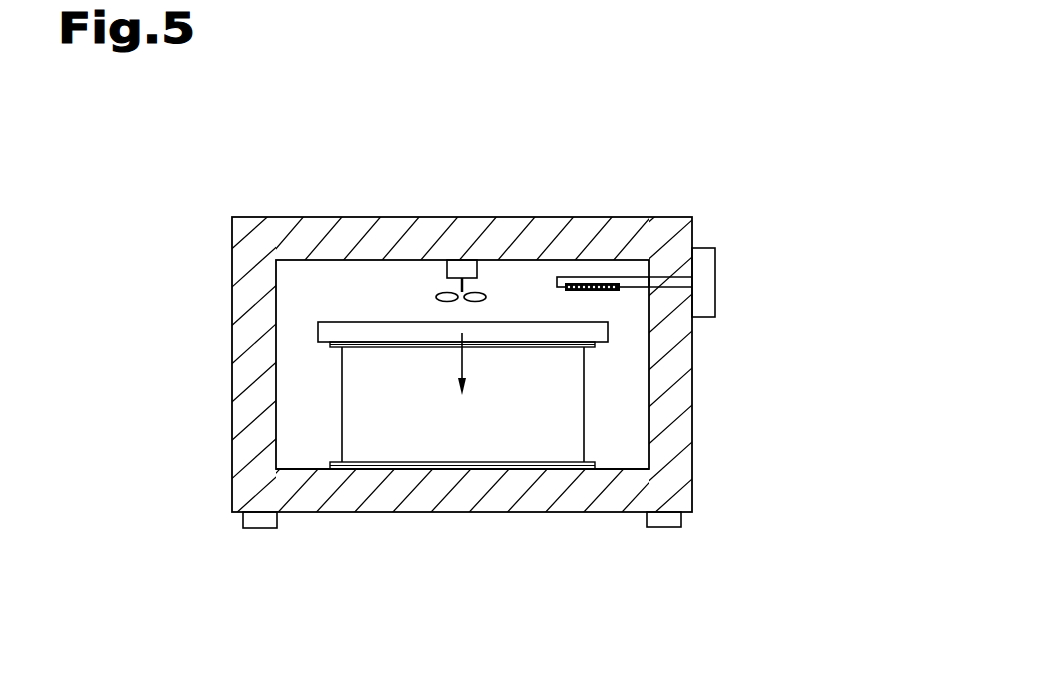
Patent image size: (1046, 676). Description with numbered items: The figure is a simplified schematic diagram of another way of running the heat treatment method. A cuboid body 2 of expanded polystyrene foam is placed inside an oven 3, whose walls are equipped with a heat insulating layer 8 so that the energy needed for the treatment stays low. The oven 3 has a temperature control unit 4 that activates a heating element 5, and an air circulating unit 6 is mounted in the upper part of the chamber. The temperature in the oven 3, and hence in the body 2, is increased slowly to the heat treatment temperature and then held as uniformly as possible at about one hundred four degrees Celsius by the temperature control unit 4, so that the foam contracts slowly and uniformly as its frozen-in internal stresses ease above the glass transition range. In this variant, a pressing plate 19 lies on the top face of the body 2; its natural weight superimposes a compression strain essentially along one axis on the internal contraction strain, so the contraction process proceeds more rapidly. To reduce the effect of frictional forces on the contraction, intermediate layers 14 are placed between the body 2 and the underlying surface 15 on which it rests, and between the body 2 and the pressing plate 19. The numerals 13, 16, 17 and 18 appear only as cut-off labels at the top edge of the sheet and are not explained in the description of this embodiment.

The body 2 is at (402, 352).
The oven 3 is at (471, 323).
The temperature control unit 4 is at (703, 277).
The heating element 5 is at (588, 286).
The air circulating unit 6 is at (461, 264).
The heat insulating layer 8 is at (653, 235).
The reference numeral 13 is at (783, 13).
The intermediate layers 14 is at (310, 343).
The underlying surface 15 is at (303, 458).
The reference numeral 16 is at (303, 9).
The reference numeral 17 is at (392, 9).
The reference numeral 18 is at (560, 9).
The pressing plate 19 is at (358, 332).